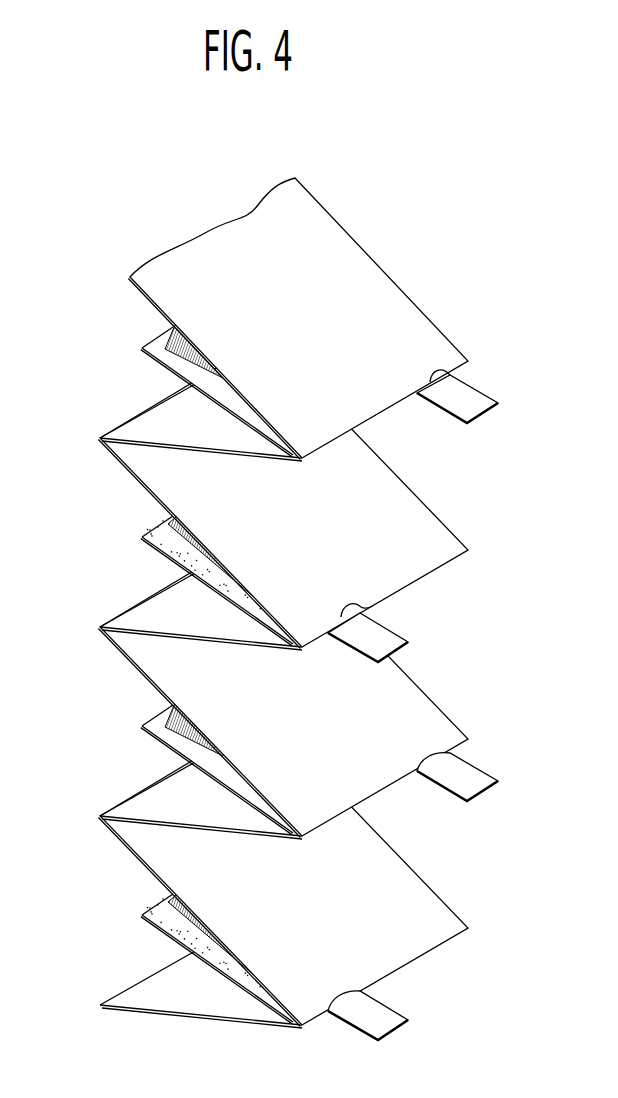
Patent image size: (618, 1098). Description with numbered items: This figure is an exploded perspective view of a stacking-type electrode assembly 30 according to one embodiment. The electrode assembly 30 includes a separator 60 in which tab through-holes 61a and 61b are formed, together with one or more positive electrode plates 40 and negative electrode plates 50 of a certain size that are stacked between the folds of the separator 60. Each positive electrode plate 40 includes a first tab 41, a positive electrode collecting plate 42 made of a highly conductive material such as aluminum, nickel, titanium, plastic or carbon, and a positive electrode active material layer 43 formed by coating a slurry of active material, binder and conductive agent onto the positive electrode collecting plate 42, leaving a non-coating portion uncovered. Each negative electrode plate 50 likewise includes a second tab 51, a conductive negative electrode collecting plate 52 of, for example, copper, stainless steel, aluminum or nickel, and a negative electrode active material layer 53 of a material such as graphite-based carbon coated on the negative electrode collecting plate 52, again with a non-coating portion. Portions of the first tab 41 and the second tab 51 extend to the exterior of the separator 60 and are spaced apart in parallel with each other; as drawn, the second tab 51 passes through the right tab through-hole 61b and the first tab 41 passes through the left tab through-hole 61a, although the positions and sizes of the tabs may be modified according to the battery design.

The electrode assembly 30 is at (428, 200).
The positive electrode plate 40 is at (90, 466).
The first tab 41 is at (388, 642).
The positive electrode collecting plate 42 is at (153, 532).
The positive electrode active material layer 43 is at (163, 547).
The negative electrode plate 50 is at (108, 282).
The second tab 51 is at (477, 410).
The negative electrode collecting plate 52 is at (153, 345).
The negative electrode active material layer 53 is at (163, 359).
The separator 60 is at (436, 313).
The left tab through-hole 61a is at (372, 605).
The right tab through-hole 61b is at (452, 372).